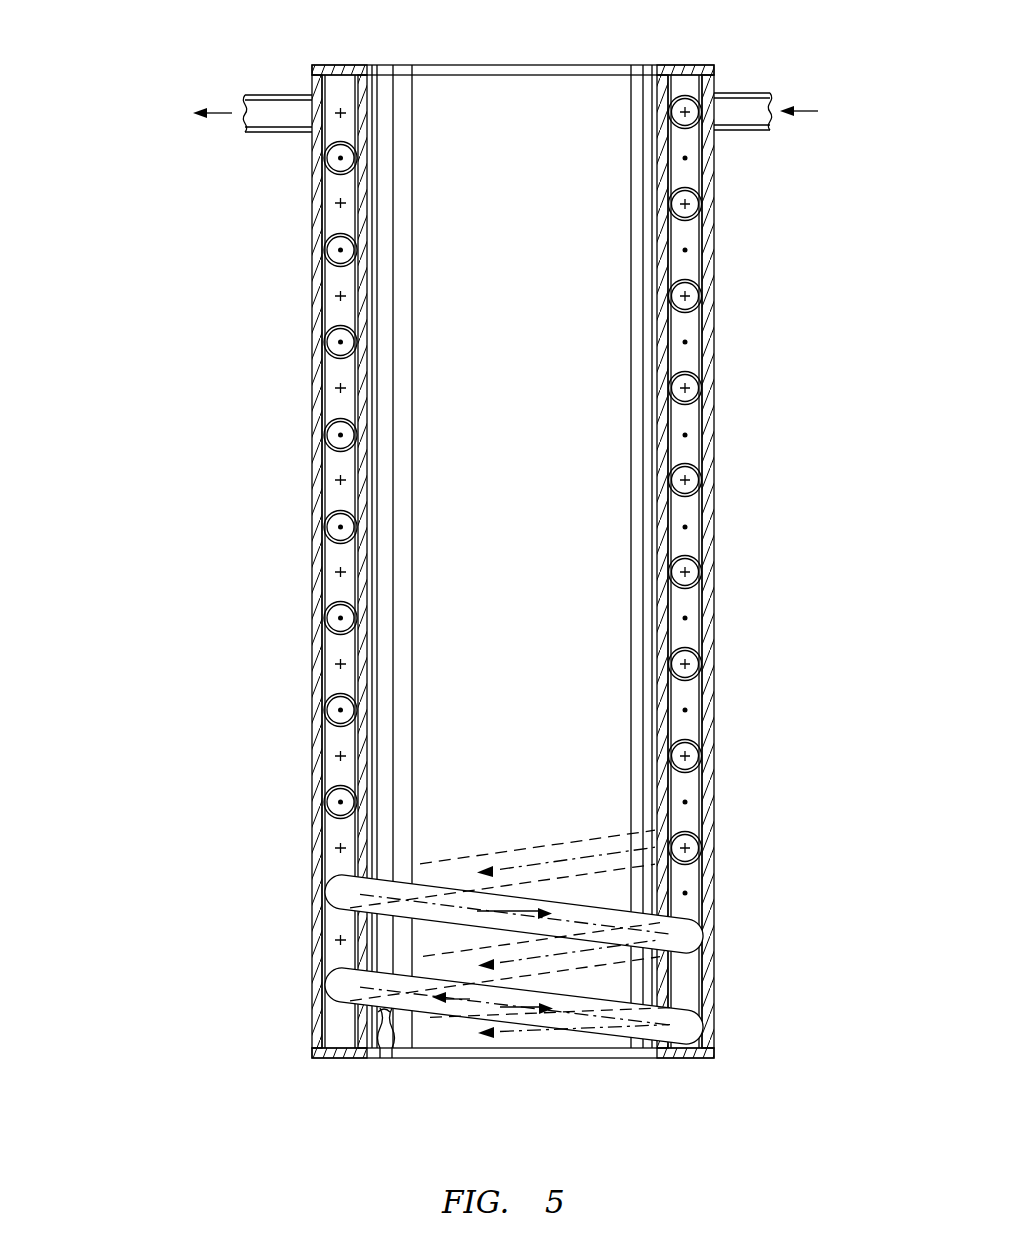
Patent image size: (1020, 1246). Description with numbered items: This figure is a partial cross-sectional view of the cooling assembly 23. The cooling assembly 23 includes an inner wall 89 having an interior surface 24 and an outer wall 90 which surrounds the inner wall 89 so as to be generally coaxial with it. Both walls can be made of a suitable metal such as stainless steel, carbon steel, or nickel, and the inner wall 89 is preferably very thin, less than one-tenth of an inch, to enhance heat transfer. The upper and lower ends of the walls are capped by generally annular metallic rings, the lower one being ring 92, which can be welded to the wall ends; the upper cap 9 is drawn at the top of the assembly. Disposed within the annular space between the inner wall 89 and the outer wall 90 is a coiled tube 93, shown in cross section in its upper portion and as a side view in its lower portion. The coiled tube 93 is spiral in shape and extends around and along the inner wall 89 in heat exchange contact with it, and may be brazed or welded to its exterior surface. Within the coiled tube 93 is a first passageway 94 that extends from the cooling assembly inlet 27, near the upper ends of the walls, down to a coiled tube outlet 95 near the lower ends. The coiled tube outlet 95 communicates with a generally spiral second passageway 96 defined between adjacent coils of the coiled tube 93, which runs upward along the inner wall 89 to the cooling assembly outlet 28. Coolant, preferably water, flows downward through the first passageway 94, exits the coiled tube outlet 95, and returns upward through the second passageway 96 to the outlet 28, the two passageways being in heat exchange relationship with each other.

The top end plate of housing 9 is at (679, 65).
The cooling assembly 23 is at (535, 564).
The interior surface 24 is at (367, 468).
The cooling assembly inlet 27 is at (738, 92).
The cooling assembly outlet 28 is at (283, 93).
The inner wall 89 is at (367, 357).
The outer wall 90 is at (312, 562).
The annular metallic ring 92 is at (690, 1059).
The coiled tube 93 is at (703, 931).
The first passageway 94 is at (702, 572).
The coiled tube outlet 95 is at (379, 1060).
The second passageway 96 is at (327, 1030).